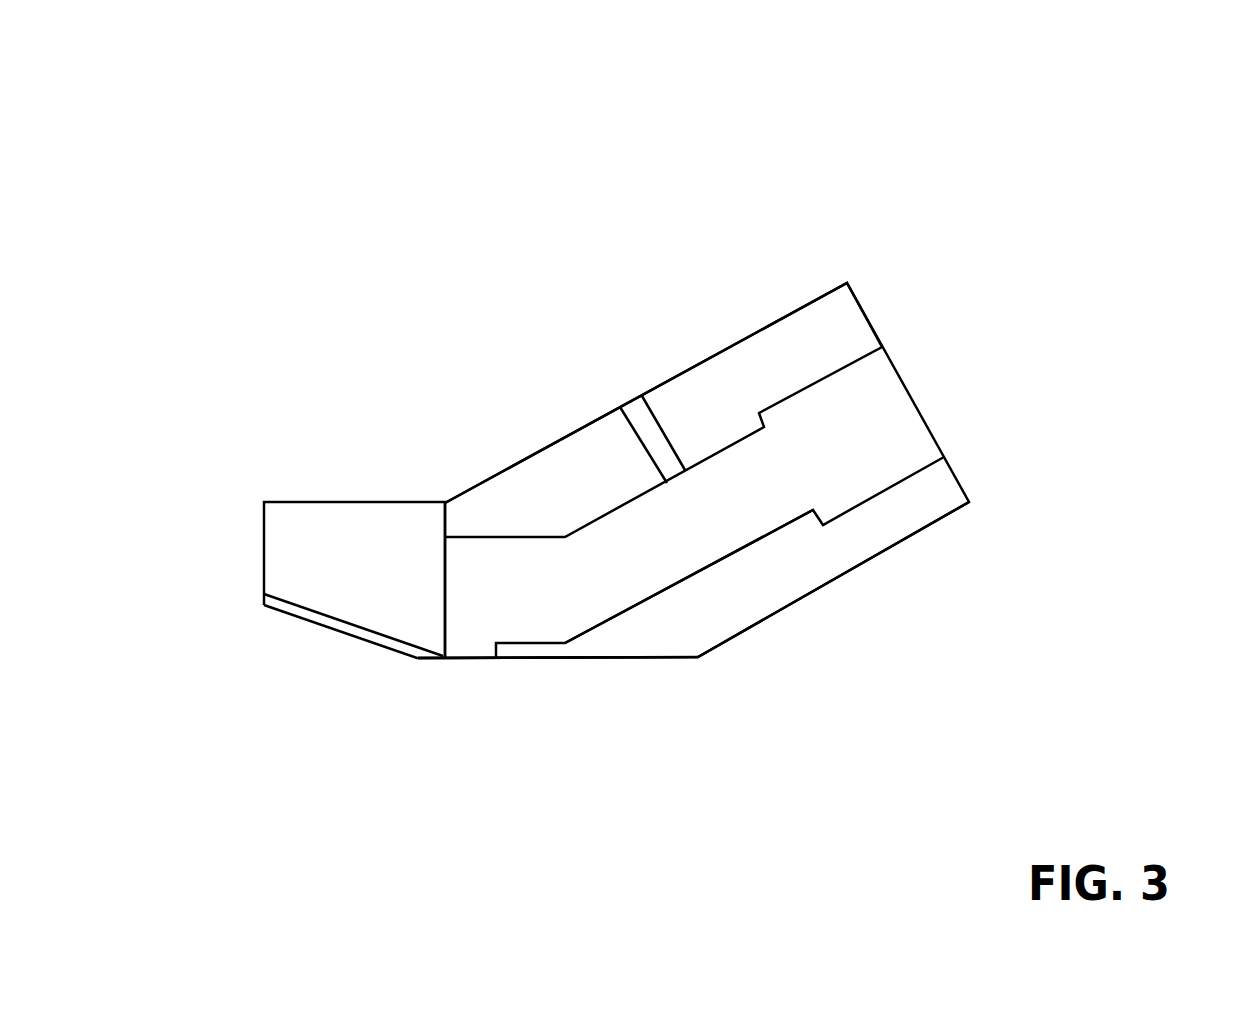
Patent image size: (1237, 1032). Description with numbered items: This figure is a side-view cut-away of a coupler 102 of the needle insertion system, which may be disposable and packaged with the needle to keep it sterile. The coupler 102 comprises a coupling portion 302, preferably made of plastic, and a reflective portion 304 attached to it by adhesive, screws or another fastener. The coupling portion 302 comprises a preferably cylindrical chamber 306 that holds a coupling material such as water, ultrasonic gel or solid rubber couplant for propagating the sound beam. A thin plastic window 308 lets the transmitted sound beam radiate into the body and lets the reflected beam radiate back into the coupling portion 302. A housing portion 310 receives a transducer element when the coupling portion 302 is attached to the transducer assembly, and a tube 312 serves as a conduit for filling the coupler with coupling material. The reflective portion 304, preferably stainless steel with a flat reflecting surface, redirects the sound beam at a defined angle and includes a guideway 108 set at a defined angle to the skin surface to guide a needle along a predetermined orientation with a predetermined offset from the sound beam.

The coupler 102 is at (1020, 151).
The guideway 108 is at (325, 627).
The coupling portion 302 is at (788, 314).
The reflective portion 304 is at (390, 502).
The chamber 306 is at (653, 596).
The window 308 is at (472, 695).
The housing portion 310 is at (858, 505).
The tube 312 is at (622, 412).